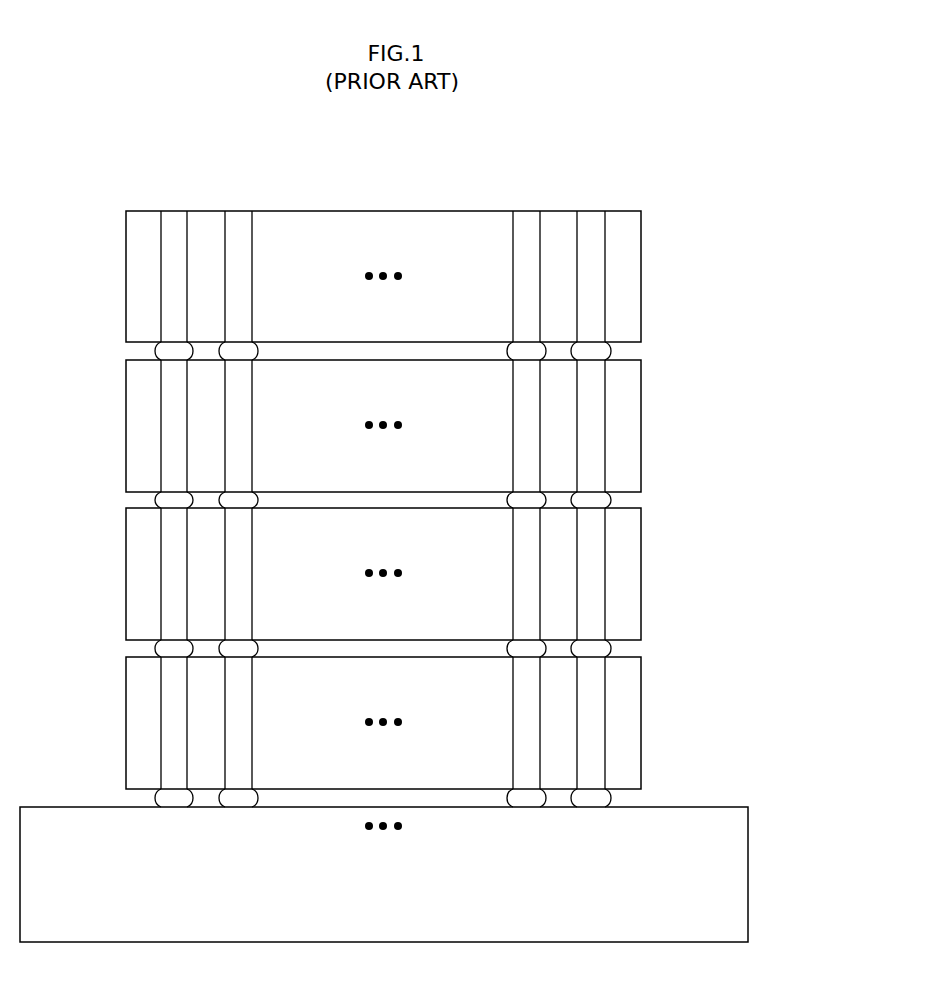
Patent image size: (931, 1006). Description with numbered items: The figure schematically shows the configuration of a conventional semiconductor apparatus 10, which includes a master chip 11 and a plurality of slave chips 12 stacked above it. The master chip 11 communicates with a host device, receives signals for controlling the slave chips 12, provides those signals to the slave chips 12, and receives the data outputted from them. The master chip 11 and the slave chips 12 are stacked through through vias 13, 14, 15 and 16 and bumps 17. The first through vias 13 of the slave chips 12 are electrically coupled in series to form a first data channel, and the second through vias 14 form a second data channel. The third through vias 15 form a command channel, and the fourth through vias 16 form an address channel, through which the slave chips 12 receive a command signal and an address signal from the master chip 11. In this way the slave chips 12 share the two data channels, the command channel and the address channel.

The semiconductor apparatus 10 is at (108, 155).
The master chip 11 is at (748, 872).
The slave chips 12 is at (641, 251).
The first through vias 13 is at (187, 282).
The second through vias 14 is at (252, 282).
The third through vias 15 is at (540, 282).
The fourth through vias 16 is at (605, 282).
The bumps 17 is at (156, 355).